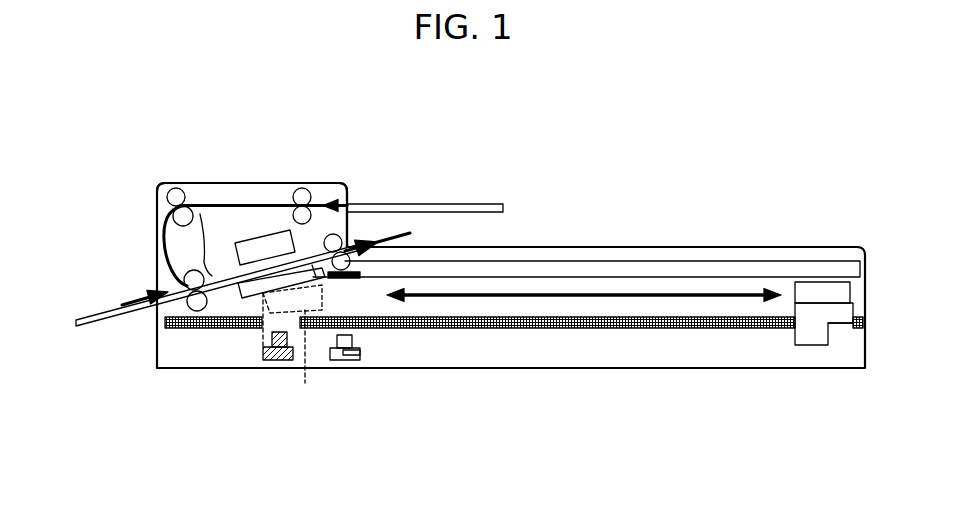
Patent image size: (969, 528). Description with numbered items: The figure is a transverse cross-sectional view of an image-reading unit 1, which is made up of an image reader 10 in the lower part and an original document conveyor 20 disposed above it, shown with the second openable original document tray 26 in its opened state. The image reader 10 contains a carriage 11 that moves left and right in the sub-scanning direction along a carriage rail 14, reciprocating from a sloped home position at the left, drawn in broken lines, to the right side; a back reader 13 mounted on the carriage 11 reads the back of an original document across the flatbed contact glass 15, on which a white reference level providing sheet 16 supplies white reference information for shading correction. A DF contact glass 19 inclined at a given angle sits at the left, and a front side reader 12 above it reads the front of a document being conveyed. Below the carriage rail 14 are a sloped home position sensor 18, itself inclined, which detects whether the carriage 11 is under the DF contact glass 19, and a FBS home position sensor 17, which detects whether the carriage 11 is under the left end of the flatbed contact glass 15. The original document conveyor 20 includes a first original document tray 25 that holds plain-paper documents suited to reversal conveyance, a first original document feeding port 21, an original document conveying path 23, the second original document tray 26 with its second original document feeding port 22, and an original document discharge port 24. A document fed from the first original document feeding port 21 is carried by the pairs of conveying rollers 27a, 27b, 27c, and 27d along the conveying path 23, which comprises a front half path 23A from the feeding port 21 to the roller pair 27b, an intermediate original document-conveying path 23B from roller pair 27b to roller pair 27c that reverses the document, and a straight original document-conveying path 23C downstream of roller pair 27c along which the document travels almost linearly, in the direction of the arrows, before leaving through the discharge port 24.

The image-reading unit 1 is at (464, 341).
The image reader 10 is at (129, 333).
The carriage 11 is at (843, 330).
The front side reader 12 is at (258, 243).
The back reader 13 is at (833, 281).
The carriage rail 14 is at (210, 330).
The flatbed contact glass 15 is at (665, 261).
The white reference level providing sheet 16 is at (358, 268).
The FBS home position sensor 17 is at (345, 368).
The sloped home position sensor 18 is at (278, 368).
The DF contact glass 19 is at (247, 298).
The original document conveyor 20 is at (113, 249).
The first original document feeding port 21 is at (341, 185).
The second original document feeding port 22 is at (144, 290).
The original document conveying path 23 is at (227, 191).
The front half path 23A is at (223, 203).
The intermediate original document-conveying path 23B is at (157, 218).
The straight original document-conveying path 23C is at (200, 214).
The original document discharge port 24 is at (410, 233).
The first original document tray 25 is at (482, 172).
The second openable original document tray 26 is at (92, 315).
The pair of conveying rollers 27a is at (304, 196).
The pair of conveying rollers 27b is at (194, 218).
The pair of conveying rollers 27c is at (197, 301).
The pair of conveying rollers 27d is at (343, 244).